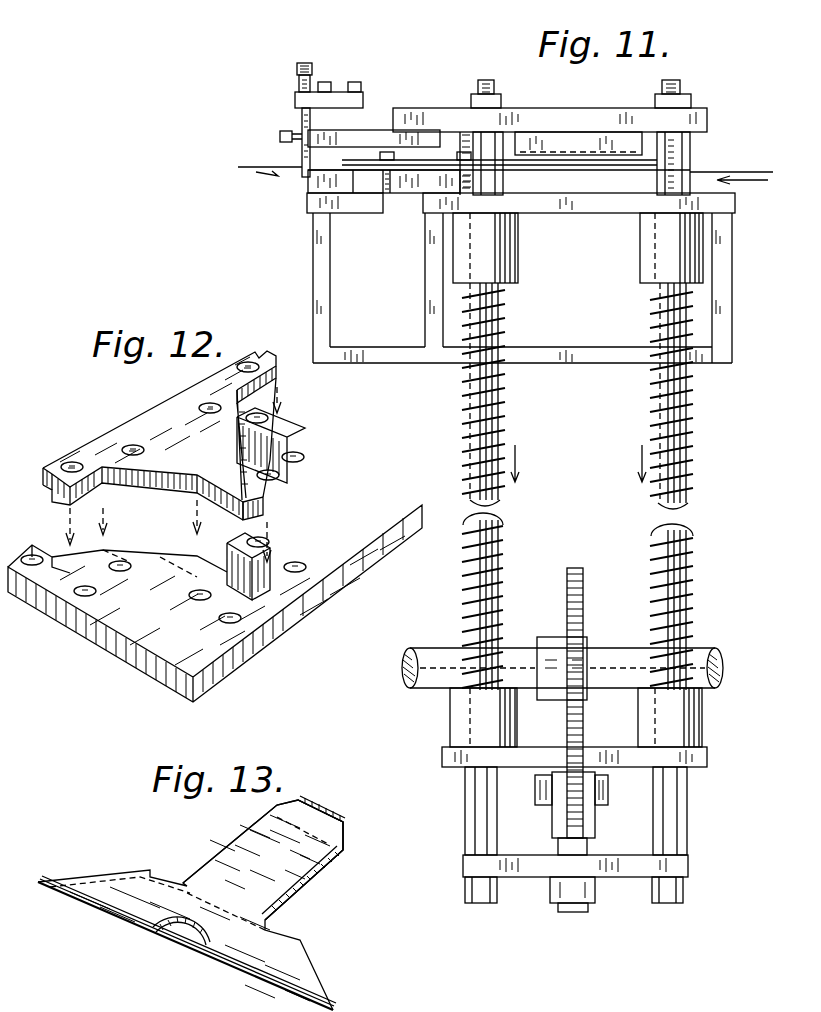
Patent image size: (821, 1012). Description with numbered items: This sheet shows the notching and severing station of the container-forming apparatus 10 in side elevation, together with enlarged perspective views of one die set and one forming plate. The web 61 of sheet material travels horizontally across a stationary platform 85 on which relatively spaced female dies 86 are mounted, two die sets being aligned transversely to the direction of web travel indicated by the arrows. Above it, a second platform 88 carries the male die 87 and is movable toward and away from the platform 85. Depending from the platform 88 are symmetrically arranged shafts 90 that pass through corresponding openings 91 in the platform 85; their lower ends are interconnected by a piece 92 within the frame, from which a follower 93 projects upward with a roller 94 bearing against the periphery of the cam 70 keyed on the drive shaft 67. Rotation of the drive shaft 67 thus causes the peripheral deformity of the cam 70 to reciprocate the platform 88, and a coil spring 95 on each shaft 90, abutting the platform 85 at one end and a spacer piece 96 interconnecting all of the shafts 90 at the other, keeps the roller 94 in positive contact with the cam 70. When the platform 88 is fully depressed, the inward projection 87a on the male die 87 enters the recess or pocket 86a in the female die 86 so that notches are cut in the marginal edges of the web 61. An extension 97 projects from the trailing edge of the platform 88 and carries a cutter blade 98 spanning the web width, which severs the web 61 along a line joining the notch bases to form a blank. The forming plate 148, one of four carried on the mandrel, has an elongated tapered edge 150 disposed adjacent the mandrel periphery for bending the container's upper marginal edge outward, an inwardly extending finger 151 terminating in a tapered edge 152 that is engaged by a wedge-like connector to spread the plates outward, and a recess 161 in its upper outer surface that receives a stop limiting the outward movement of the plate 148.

In FIG. 11, the machine assembly 10 is at (333, 1010).
In FIG. 11, the web 61 is at (771, 175).
In FIG. 11, the drive shaft 67 is at (423, 655).
In FIG. 11, the cam 70 is at (582, 578).
In FIG. 11, the stationary platform 85 is at (580, 205).
In FIG. 12, the female die 86 is at (337, 472).
In FIG. 12, the recess or pocket 86a is at (247, 588).
In FIG. 11, the male die 87 is at (552, 148).
In FIG. 12, the male die 87 is at (137, 423).
In FIG. 12, the inward projection 87a is at (270, 490).
In FIG. 11, the second platform 88 is at (707, 121).
In FIG. 11, the shafts 90 is at (650, 392).
In FIG. 11, the openings 91 is at (518, 272).
In FIG. 11, the piece 92 is at (530, 877).
In FIG. 11, the follower 93 is at (573, 858).
In FIG. 11, the roller 94 is at (585, 822).
In FIG. 11, the coil spring 95 is at (503, 530).
In FIG. 11, the spacer piece 96 is at (693, 767).
In FIG. 11, the extension 97 is at (375, 138).
In FIG. 11, the cutter blade 98 is at (300, 158).
In FIG. 13, the plate 148 is at (139, 860).
In FIG. 13, the elongated tapered edge 150 is at (102, 908).
In FIG. 13, the finger 151 is at (290, 840).
In FIG. 13, the tapered edge 152 is at (341, 814).
In FIG. 13, the recess 161 is at (166, 938).